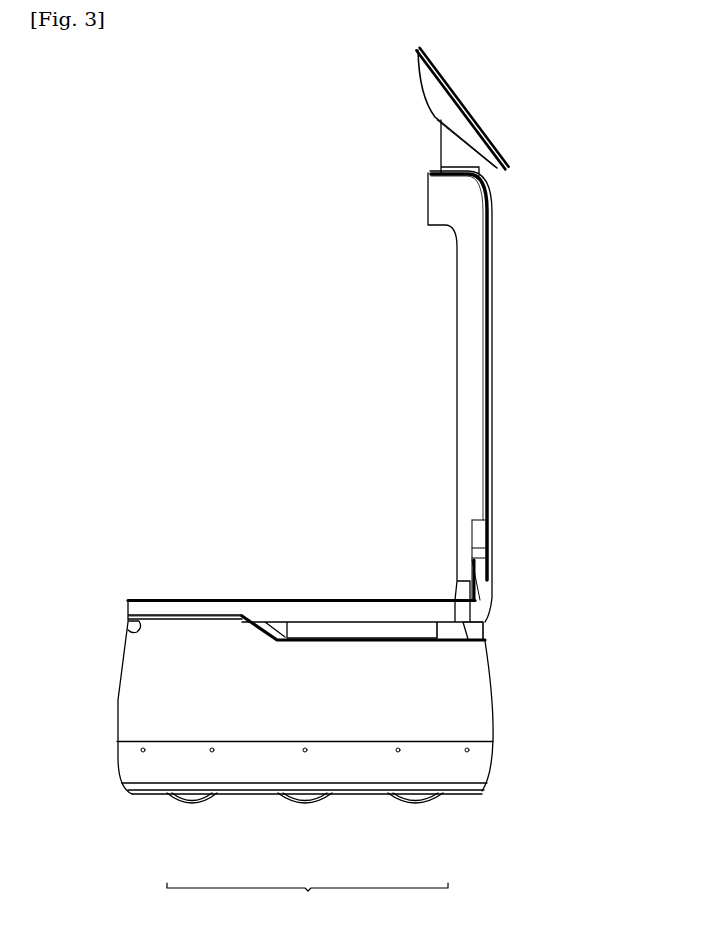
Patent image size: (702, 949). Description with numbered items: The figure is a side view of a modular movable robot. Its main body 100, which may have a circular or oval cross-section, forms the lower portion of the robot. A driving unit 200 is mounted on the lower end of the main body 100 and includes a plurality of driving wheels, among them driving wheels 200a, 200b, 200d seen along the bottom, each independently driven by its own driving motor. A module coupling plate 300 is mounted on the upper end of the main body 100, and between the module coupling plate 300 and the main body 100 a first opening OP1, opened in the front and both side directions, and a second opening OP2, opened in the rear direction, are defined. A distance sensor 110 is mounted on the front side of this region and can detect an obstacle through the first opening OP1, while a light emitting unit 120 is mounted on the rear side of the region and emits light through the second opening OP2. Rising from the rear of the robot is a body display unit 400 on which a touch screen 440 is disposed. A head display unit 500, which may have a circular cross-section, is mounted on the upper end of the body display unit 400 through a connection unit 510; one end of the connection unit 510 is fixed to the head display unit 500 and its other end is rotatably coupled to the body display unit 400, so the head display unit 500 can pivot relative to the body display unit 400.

The main body 100 is at (133, 678).
The distance sensor 110 is at (478, 648).
The light emitting unit 120 is at (128, 620).
The first opening OP1 is at (475, 632).
The second opening OP2 is at (135, 631).
The driving unit 200 is at (307, 902).
The driving wheel 200a is at (418, 800).
The driving wheel 200b is at (305, 800).
The driving wheel 200d is at (193, 800).
The module coupling plate 300 is at (305, 600).
The body display unit 400 is at (472, 312).
The touch screen 440 is at (492, 275).
The head display unit 500 is at (467, 103).
The connection unit 510 is at (450, 152).